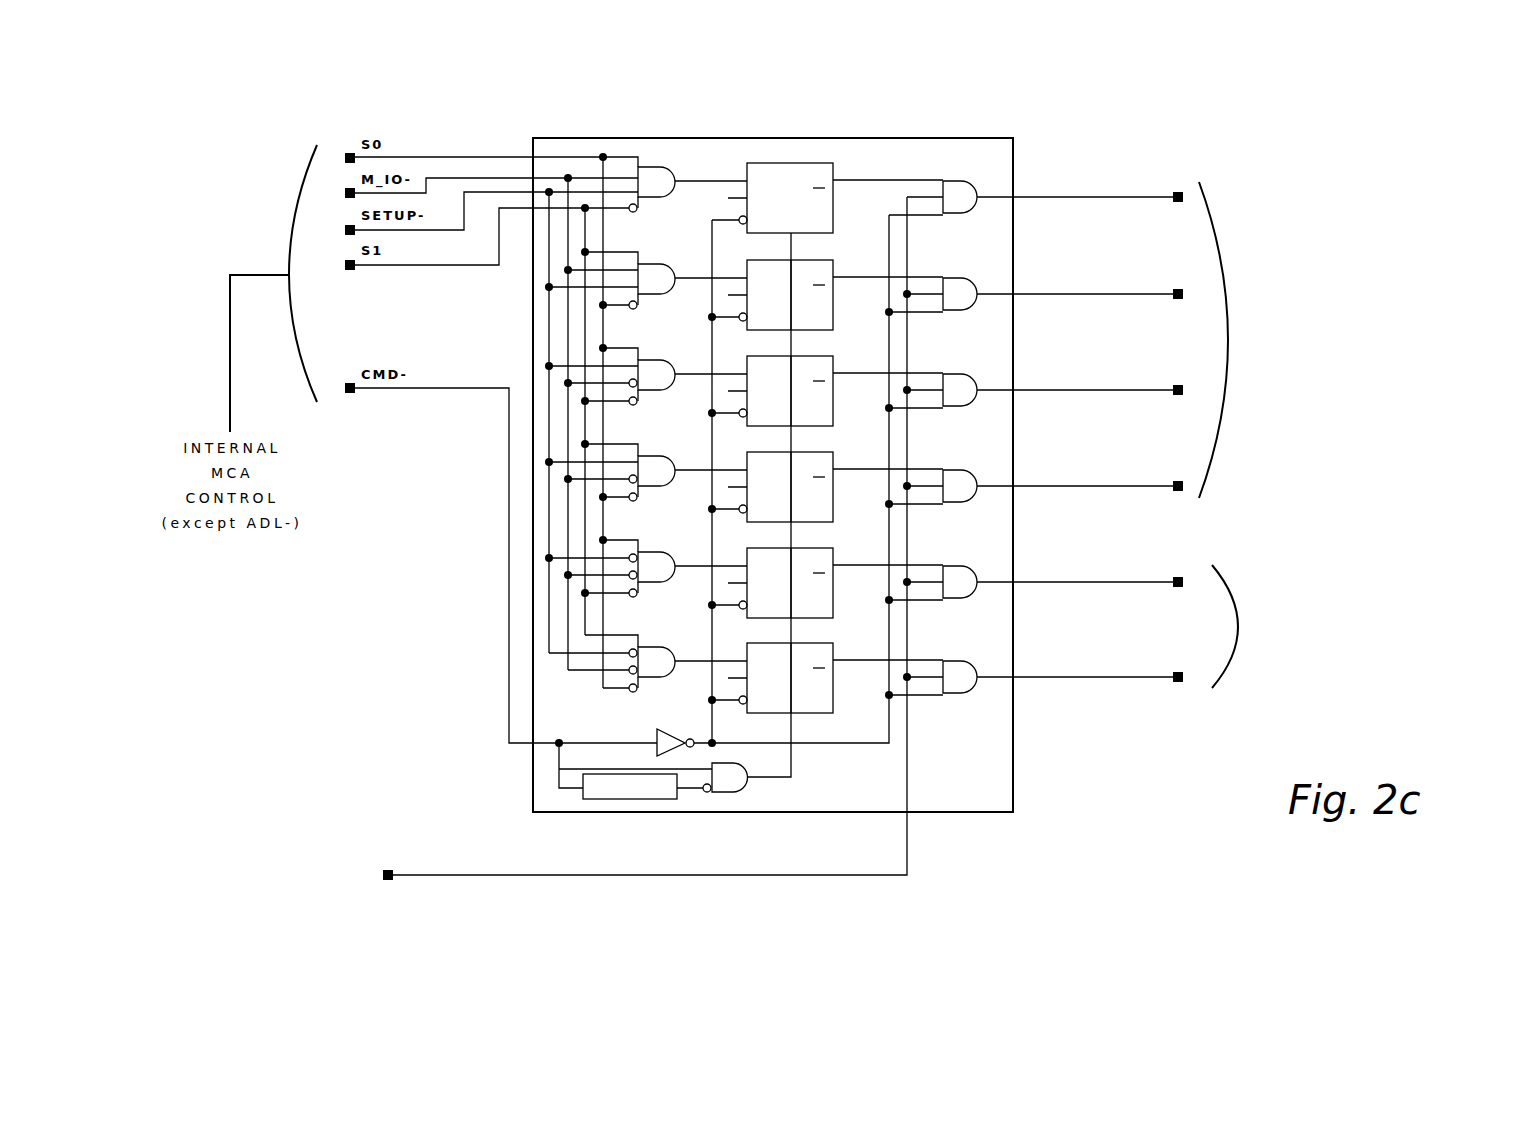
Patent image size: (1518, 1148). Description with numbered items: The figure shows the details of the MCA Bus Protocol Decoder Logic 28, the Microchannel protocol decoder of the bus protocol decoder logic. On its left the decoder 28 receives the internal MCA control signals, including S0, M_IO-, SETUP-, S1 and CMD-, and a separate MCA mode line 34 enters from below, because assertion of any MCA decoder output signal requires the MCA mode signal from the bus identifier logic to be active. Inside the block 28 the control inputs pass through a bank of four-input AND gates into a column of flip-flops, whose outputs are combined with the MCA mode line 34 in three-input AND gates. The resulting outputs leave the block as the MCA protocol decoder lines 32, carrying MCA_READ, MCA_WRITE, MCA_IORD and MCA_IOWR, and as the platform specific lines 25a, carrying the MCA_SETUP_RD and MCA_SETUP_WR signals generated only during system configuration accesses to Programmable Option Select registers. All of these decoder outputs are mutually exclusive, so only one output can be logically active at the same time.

The MCA Bus Protocol Decoder Logic 28 is at (962, 812).
The MCA signal line 34 is at (492, 874).
The MCA decoder output lines 32 is at (1228, 340).
The MCA protocol decoder platform specific lines 25a is at (1248, 639).